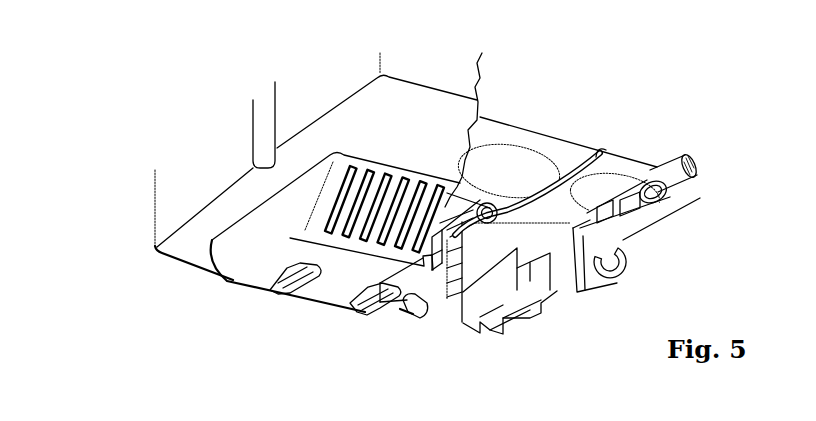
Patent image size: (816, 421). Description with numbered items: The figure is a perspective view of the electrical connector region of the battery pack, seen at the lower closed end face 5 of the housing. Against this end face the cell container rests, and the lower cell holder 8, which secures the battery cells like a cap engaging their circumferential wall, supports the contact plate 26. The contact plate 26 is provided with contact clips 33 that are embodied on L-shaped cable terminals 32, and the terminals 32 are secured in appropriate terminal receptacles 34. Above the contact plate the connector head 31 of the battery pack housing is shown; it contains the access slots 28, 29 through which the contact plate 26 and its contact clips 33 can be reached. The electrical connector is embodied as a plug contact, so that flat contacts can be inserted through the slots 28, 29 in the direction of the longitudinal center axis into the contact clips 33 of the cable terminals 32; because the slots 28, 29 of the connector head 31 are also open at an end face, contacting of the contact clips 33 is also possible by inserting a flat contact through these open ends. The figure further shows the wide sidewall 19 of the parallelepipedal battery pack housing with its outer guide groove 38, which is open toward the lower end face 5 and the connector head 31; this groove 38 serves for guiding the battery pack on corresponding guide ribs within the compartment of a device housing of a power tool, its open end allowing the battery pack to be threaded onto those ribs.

The closed end face 5 is at (157, 253).
The cell holder 8 is at (573, 148).
The sidewall 19 is at (295, 86).
The contact plate 26 is at (573, 258).
The access slot 28 is at (278, 290).
The access slot 29 is at (357, 308).
The connector head 31 is at (233, 257).
The cable terminal 32 is at (632, 230).
The contact clip 33 is at (600, 273).
The terminal receptacle 34 is at (477, 298).
The outer guide groove 38 is at (257, 110).